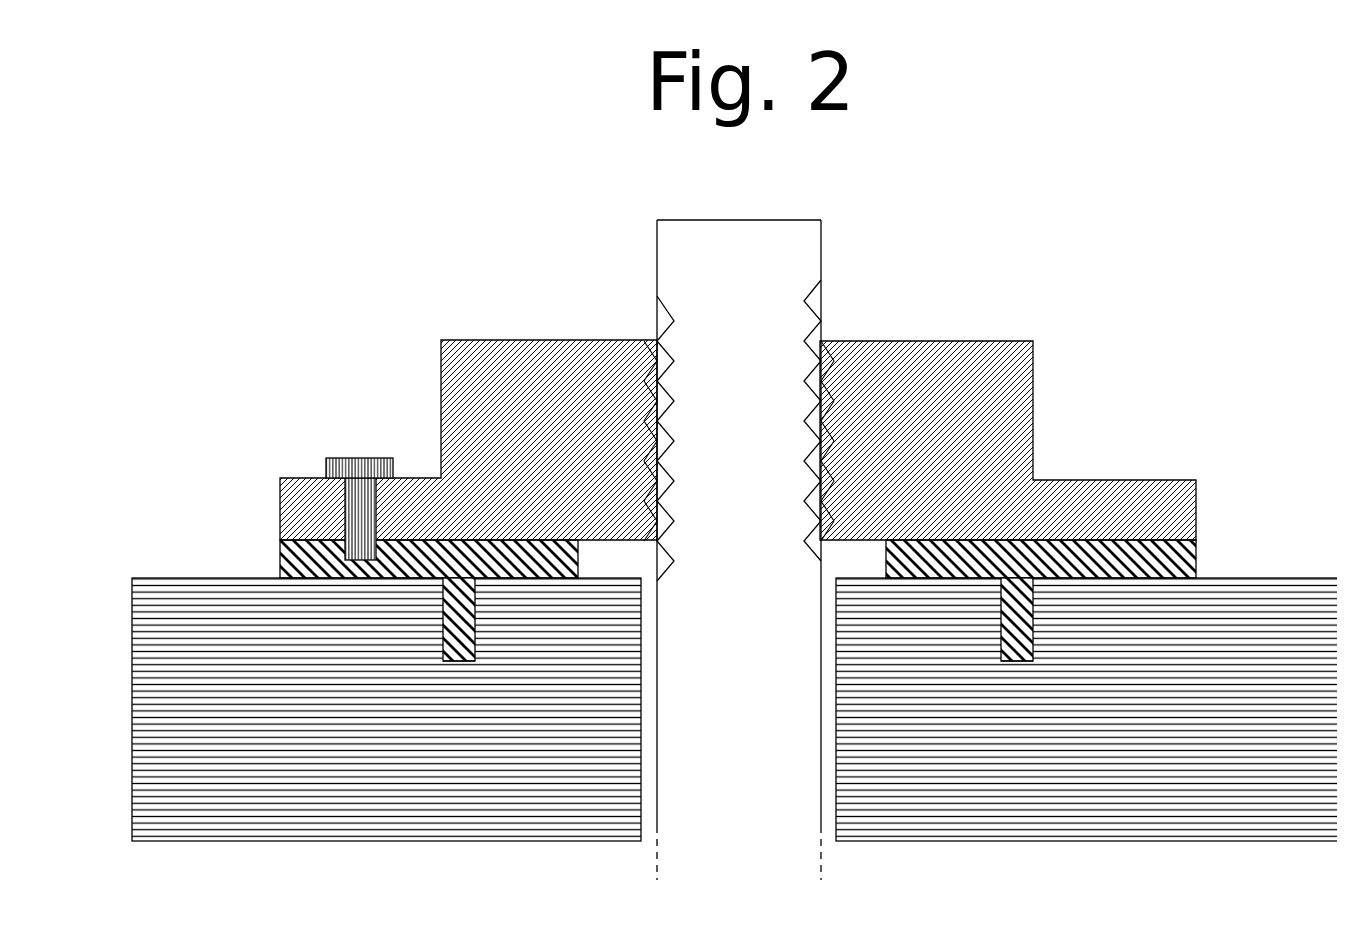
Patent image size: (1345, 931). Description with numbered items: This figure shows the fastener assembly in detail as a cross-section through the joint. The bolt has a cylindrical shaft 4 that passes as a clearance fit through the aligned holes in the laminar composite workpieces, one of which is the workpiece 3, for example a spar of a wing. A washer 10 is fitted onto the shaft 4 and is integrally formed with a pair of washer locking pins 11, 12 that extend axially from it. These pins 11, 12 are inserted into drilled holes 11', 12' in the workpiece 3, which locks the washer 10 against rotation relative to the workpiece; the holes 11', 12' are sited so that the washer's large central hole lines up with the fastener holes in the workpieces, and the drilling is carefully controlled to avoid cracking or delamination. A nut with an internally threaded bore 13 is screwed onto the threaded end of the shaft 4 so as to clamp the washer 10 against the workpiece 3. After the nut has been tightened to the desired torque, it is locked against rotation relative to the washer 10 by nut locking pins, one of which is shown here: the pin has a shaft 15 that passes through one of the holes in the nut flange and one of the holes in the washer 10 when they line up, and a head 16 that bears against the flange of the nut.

The workpiece 3 is at (237, 828).
The shaft 4 is at (664, 742).
The washer 10 is at (272, 542).
The washer locking pin 11 is at (420, 621).
The drilled hole 11' is at (431, 689).
The washer locking pin 12 is at (985, 621).
The drilled hole 12' is at (980, 690).
The internally threaded bore 13 is at (808, 388).
The nut locking pin shaft 15 is at (368, 507).
The nut locking pin head 16 is at (347, 450).